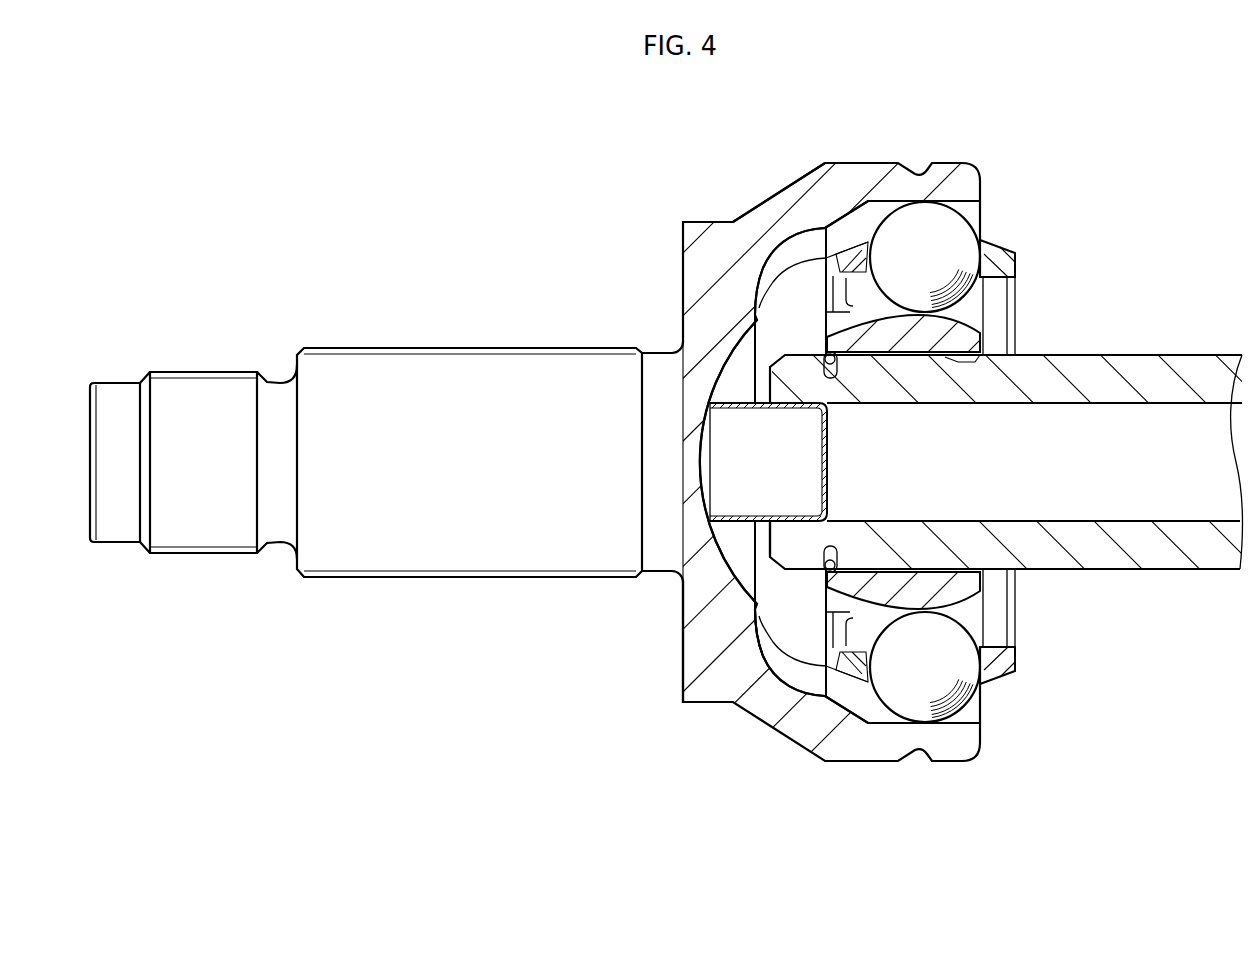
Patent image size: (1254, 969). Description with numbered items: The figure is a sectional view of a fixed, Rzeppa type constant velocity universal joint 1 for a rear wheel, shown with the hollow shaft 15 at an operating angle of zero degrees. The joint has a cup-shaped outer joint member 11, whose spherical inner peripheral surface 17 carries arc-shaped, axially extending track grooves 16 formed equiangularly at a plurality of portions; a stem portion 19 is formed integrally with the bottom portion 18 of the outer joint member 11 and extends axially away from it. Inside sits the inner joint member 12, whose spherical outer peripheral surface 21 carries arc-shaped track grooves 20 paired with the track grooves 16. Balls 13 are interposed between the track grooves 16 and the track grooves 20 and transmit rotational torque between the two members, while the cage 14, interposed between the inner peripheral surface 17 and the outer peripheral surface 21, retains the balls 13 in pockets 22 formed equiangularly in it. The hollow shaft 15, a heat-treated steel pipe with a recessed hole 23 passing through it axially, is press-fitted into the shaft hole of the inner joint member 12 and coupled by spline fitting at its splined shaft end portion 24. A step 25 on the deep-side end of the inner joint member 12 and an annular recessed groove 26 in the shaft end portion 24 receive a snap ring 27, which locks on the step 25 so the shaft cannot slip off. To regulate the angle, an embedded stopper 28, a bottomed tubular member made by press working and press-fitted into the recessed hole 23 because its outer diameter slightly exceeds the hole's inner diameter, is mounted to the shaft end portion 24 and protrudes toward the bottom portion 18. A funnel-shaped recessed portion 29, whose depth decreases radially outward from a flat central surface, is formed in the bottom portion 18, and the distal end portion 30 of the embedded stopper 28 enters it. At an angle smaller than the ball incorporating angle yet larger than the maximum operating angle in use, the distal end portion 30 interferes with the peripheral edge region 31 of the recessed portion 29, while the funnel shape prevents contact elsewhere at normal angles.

The Rzeppa type constant velocity universal joint 1 is at (621, 194).
The outer joint member 11 is at (773, 197).
The inner joint member 12 is at (985, 582).
The balls 13 is at (969, 221).
The cage 14 is at (1016, 251).
The hollow shaft 15 is at (1136, 355).
The track grooves 16 is at (870, 222).
The spherical inner peripheral surface 17 is at (852, 668).
The bottom portion 18 is at (710, 690).
The stem portion 19 is at (440, 378).
The track grooves 20 is at (975, 319).
The spherical outer peripheral surface 21 is at (822, 265).
The pockets 22 is at (981, 690).
The recessed hole 23 is at (1147, 523).
The shaft end portion 24 is at (786, 544).
The step 25 is at (823, 569).
The annular recessed groove 26 is at (836, 553).
The snap ring 27 is at (839, 364).
The embedded stopper 28 is at (784, 518).
The recessed portion 29 is at (708, 445).
The distal end portion 30 is at (735, 403).
The peripheral edge region 31 is at (760, 617).